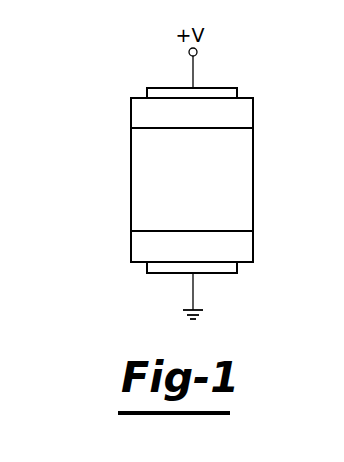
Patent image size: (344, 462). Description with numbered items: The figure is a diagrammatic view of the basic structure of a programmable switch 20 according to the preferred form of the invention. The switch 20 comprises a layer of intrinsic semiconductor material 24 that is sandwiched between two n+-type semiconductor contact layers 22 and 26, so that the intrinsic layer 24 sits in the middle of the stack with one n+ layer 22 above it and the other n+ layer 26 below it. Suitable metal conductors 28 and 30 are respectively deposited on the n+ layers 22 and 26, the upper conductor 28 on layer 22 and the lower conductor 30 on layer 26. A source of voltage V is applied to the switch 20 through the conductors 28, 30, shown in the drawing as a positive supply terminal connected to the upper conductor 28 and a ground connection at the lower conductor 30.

The programmable switch 20 is at (265, 158).
The n+-type semiconductor contact layer 22 is at (131, 110).
The layer of intrinsic semiconductor material 24 is at (137, 170).
The n+-type semiconductor contact layer 26 is at (137, 244).
The metal conductor 28 is at (222, 92).
The metal conductor 30 is at (230, 267).